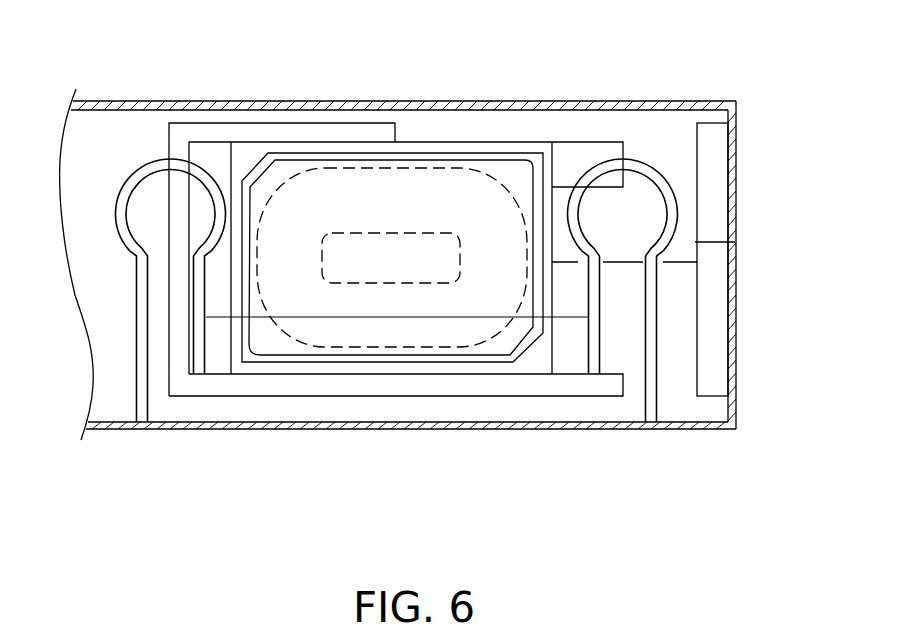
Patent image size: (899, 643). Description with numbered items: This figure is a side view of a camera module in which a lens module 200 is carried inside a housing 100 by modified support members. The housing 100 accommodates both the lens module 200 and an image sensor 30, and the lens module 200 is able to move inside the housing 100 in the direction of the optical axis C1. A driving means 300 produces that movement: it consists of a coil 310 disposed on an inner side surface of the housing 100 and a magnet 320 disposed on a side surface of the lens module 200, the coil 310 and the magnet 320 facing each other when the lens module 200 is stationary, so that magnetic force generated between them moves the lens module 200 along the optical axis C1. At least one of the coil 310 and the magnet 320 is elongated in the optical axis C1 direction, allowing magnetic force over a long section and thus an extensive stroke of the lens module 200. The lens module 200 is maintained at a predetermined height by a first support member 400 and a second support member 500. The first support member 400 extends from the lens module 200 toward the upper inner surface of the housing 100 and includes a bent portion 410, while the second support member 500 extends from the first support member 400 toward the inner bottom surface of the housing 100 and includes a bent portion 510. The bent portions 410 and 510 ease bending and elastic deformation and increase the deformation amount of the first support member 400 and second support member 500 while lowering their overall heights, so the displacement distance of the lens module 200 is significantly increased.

The image sensor 30 is at (714, 138).
The housing 100 is at (508, 102).
The lens module 200 is at (460, 143).
The driving means 300 is at (392, 348).
The coil 310 is at (440, 348).
The magnet 320 is at (498, 343).
The first support member 400 is at (595, 338).
The bent portion 410 is at (595, 172).
The second support member 500 is at (652, 347).
The bent portion 510 is at (650, 173).
The optical axis C1 is at (677, 262).